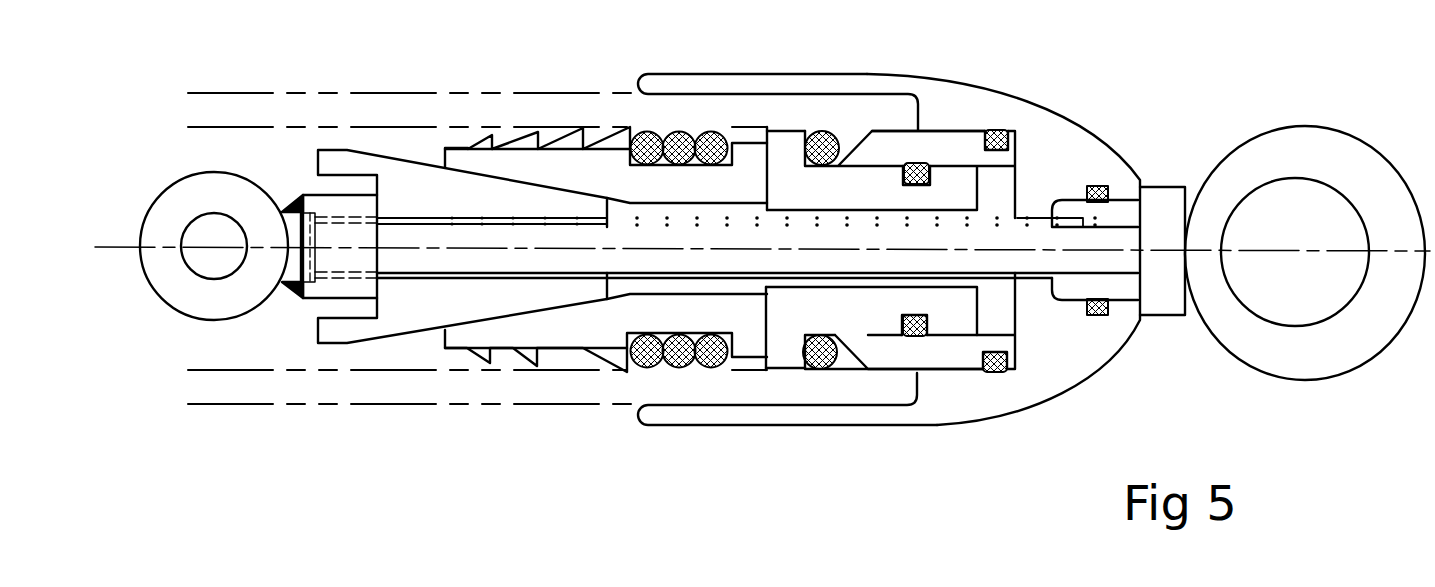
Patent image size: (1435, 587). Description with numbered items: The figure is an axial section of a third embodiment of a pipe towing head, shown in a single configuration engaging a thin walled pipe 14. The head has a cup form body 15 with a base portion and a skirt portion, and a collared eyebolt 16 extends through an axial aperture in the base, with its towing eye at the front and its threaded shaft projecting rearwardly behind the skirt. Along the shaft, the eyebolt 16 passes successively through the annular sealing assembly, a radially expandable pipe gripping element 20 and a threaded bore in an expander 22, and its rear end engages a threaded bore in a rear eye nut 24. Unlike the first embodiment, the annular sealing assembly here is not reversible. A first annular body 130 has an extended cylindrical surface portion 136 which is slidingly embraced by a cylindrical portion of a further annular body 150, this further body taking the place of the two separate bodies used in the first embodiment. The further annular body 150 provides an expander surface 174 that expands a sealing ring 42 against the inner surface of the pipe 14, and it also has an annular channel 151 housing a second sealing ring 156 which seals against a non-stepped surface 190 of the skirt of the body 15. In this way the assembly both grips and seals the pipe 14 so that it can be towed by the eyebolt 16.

The thin walled pipe 14 is at (605, 105).
The cup form body 15 is at (1065, 415).
The collared eyebolt 16 is at (1270, 367).
The radially expandable pipe gripping element 20 is at (575, 352).
The expander 22 is at (408, 322).
The rear eye nut 24 is at (230, 318).
The sealing ring 42 is at (818, 132).
The first annular body 130 is at (852, 318).
The extended cylindrical surface portion 136 is at (885, 337).
The further annular body 150 is at (962, 363).
The annular channel 151 is at (977, 137).
The sealing ring 156 is at (997, 127).
The expander surface 174 is at (848, 148).
The non-stepped surface of the skirt 190 is at (963, 127).